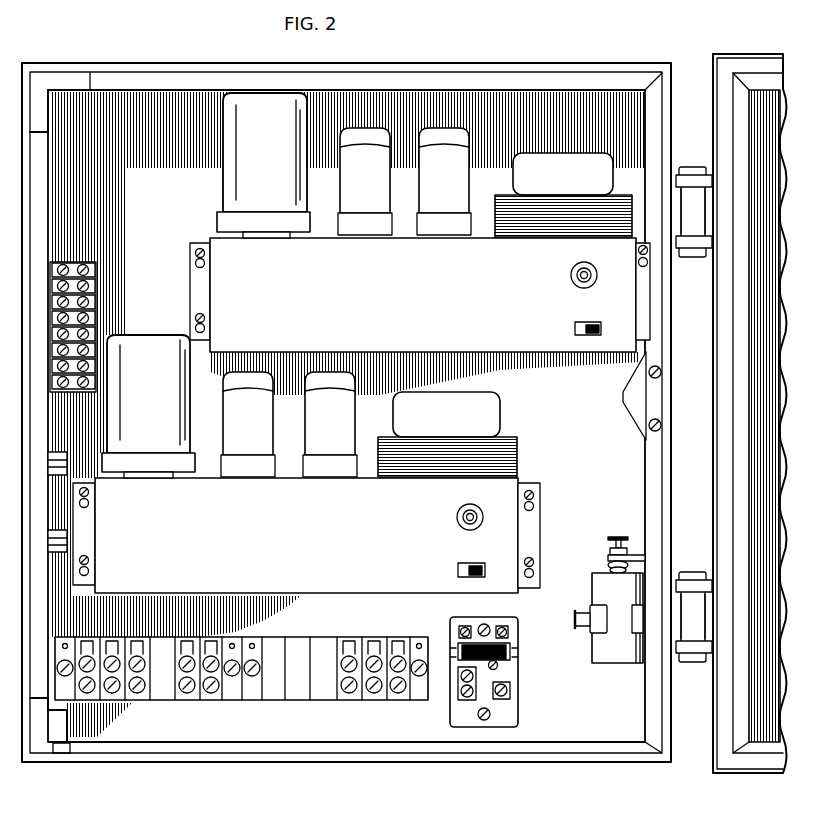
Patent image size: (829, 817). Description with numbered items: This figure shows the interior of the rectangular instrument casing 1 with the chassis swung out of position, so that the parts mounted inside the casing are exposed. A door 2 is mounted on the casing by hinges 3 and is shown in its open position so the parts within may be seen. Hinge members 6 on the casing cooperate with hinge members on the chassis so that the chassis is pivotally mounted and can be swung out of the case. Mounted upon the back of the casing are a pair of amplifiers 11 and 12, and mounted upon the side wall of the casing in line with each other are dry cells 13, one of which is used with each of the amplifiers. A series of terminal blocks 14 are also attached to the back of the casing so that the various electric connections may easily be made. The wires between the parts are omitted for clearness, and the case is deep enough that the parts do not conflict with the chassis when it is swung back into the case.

The instrument casing 1 is at (176, 77).
The door 2 is at (720, 97).
The hinges 3 is at (693, 172).
The hinge members 6 is at (42, 80).
The amplifier 11 is at (215, 283).
The amplifier 12 is at (505, 533).
The dry cells 13 is at (605, 582).
The terminal blocks 14 is at (298, 640).